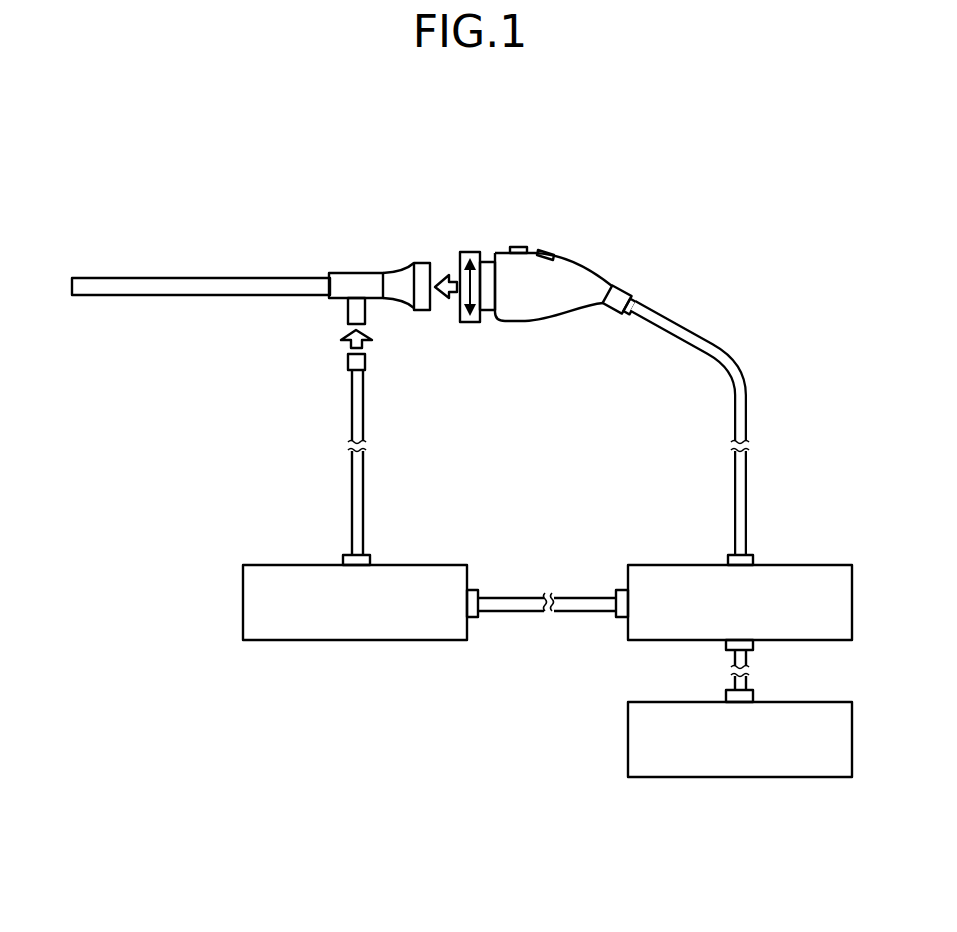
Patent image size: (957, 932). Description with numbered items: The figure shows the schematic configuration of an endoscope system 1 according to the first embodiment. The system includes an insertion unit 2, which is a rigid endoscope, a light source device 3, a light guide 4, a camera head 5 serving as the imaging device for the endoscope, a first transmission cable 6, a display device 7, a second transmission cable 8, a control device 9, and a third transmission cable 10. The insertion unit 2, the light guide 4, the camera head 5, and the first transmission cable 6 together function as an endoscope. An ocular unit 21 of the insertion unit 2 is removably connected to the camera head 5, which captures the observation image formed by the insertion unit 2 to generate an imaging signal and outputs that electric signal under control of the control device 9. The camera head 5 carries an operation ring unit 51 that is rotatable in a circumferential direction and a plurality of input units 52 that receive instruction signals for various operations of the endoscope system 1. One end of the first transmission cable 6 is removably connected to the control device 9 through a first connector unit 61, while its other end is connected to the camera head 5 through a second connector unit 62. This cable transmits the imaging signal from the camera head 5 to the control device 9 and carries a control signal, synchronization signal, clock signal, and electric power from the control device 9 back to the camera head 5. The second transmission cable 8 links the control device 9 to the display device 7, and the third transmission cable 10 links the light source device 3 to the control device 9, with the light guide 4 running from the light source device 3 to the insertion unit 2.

The endoscope system 1 is at (705, 189).
The insertion unit 2 is at (298, 277).
The ocular unit 21 is at (422, 262).
The light source device 3 is at (435, 565).
The light guide 4 is at (351, 506).
The camera head 5 is at (506, 272).
The operation ring unit 51 is at (472, 251).
The input units 52 is at (547, 252).
The first transmission cable 6 is at (665, 316).
The first connector unit 61 is at (750, 555).
The second connector unit 62 is at (623, 314).
The display device 7 is at (818, 702).
The second transmission cable 8 is at (734, 662).
The control device 9 is at (818, 565).
The third transmission cable 10 is at (518, 594).